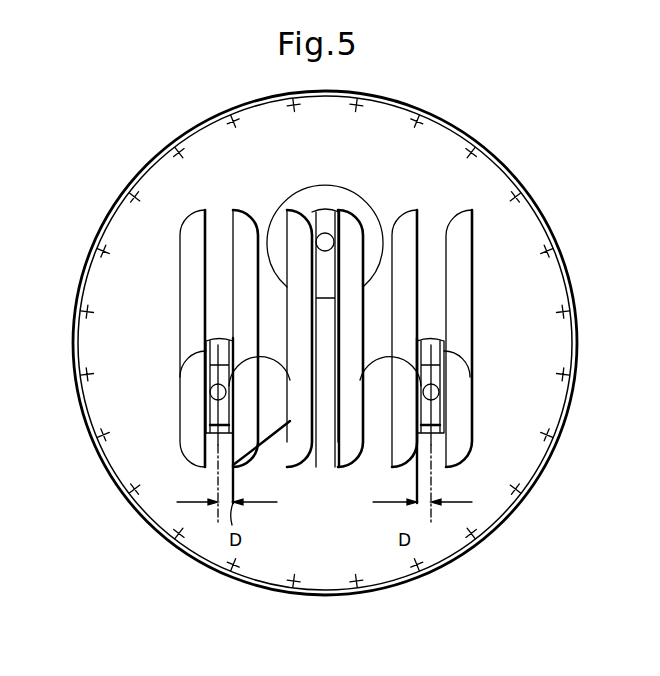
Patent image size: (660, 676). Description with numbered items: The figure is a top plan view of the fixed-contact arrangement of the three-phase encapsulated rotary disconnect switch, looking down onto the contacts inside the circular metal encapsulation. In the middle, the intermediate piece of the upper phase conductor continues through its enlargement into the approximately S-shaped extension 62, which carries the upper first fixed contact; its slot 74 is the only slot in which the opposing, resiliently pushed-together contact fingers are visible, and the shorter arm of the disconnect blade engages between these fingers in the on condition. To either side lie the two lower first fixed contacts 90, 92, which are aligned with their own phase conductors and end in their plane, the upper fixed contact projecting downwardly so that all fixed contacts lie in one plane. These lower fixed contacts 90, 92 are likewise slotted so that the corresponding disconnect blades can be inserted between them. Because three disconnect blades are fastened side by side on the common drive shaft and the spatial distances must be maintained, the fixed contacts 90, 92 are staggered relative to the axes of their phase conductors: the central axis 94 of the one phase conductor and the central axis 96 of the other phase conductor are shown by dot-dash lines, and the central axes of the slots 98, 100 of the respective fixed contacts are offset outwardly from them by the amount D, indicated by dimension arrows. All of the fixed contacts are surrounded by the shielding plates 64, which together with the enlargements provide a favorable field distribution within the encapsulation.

The S-shaped extension 62 is at (337, 262).
The shielding plates 64 is at (190, 236).
The slot 74 is at (323, 287).
The lower first fixed contact 90 is at (207, 422).
The lower first fixed contact 92 is at (443, 421).
The central axis of the one phase conductor 94 is at (232, 482).
The central axis of the other phase conductor 96 is at (418, 482).
The slot 98 is at (210, 392).
The slot 100 is at (434, 392).